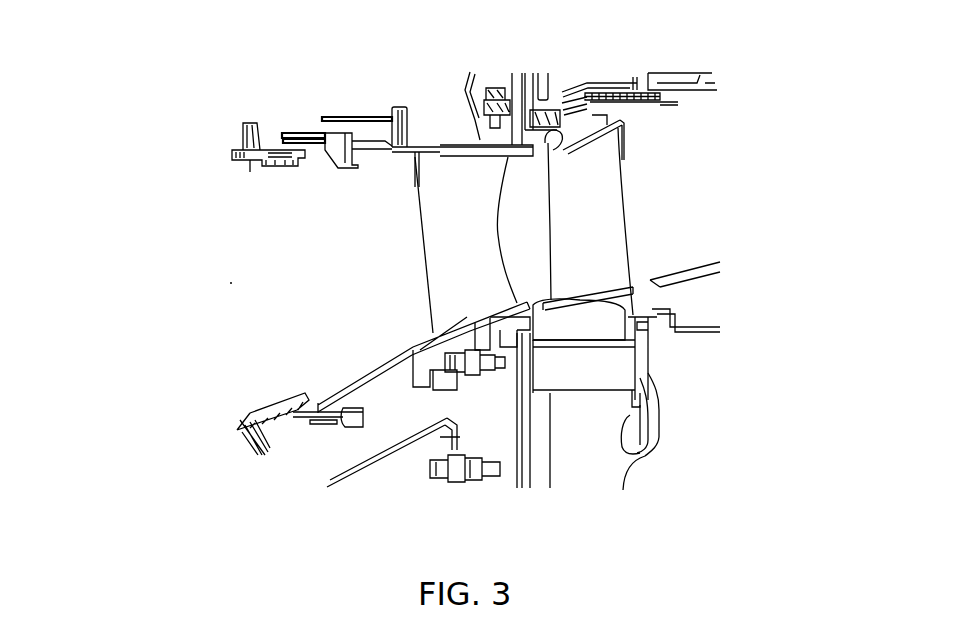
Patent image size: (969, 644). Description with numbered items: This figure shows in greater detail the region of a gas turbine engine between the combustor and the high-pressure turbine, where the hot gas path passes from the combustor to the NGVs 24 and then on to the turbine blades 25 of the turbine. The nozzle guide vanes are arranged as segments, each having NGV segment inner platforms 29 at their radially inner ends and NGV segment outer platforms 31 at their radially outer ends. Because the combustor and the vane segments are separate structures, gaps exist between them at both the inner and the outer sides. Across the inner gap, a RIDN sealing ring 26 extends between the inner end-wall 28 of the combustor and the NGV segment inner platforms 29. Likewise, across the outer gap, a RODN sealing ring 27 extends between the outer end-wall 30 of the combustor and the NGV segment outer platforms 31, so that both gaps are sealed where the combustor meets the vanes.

The NGVs 24 is at (462, 173).
The turbine blades 25 is at (605, 210).
The RIDN sealing ring 26 is at (365, 382).
The RODN sealing ring 27 is at (335, 145).
The inner end-wall 28 is at (260, 413).
The NGV segment inner platforms 29 is at (457, 377).
The outer end-wall 30 is at (232, 148).
The NGV segment outer platforms 31 is at (380, 148).